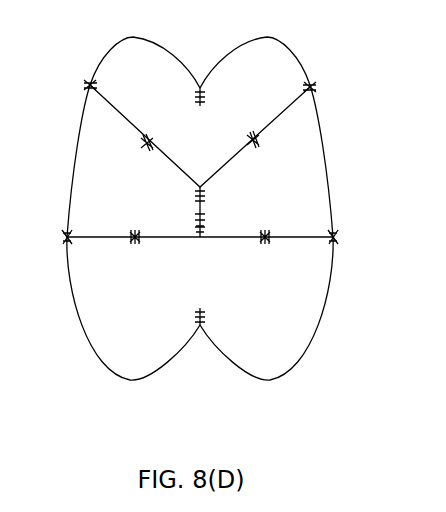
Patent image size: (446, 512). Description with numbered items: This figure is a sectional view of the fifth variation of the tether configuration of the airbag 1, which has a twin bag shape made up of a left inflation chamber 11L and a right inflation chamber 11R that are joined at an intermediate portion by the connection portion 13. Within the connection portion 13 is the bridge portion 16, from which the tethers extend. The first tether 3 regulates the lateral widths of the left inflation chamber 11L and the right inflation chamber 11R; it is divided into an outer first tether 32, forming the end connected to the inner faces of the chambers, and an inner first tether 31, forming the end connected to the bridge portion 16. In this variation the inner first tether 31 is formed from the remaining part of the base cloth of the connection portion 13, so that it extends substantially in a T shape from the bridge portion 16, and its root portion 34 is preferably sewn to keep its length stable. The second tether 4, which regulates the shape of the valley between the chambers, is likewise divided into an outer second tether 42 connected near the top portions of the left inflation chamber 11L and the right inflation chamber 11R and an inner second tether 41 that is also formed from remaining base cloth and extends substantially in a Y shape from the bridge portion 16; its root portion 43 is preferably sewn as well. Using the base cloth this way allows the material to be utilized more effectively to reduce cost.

The airbag 1 is at (207, 208).
The left inflation chamber 11L is at (75, 183).
The right inflation chamber 11R is at (331, 184).
The first tether 3 is at (130, 214).
The second tether 4 is at (121, 145).
The connection portion 13 is at (207, 98).
The bridge portion 16 is at (205, 214).
The inner first tether 31 is at (164, 240).
The outer first tether 32 is at (99, 240).
The root portion 34 is at (197, 227).
The inner second tether 41 is at (165, 165).
The outer second tether 42 is at (123, 108).
The root portion 43 is at (205, 191).